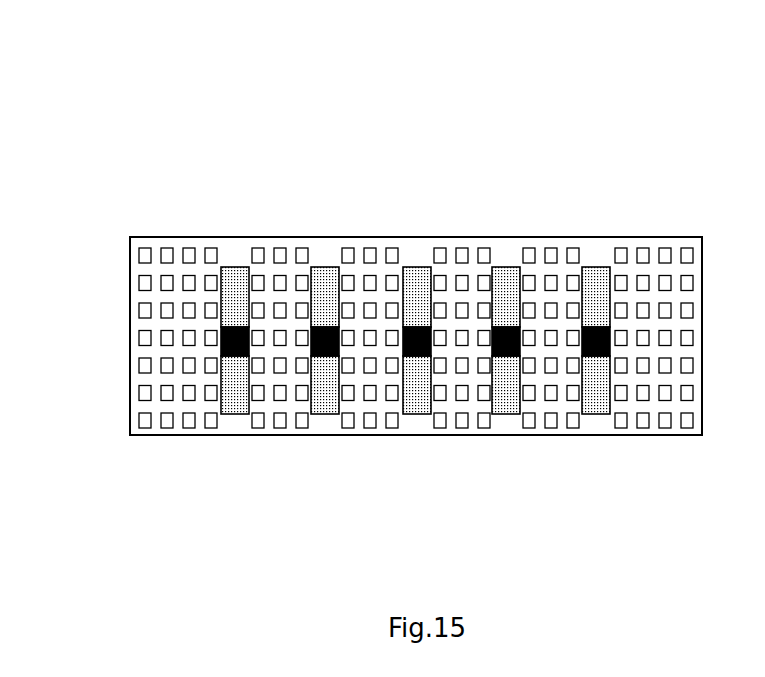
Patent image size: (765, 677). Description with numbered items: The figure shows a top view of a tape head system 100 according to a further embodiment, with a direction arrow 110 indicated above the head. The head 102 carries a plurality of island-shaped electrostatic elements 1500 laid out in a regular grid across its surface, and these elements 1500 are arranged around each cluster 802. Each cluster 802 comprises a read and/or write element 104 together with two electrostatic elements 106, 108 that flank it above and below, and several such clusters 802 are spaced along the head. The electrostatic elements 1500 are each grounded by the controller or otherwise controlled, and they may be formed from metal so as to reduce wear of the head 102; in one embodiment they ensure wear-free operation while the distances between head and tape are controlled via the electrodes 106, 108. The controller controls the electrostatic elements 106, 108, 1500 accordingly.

The tape head system 100 is at (355, 82).
The viewing direction 110 is at (527, 91).
The head 102 is at (129, 421).
The read and/or write element 104 is at (222, 343).
The electrostatic element 106 is at (237, 285).
The electrostatic element 108 is at (229, 405).
The cluster 802 is at (330, 222).
The electrostatic elements 1500 is at (146, 368).